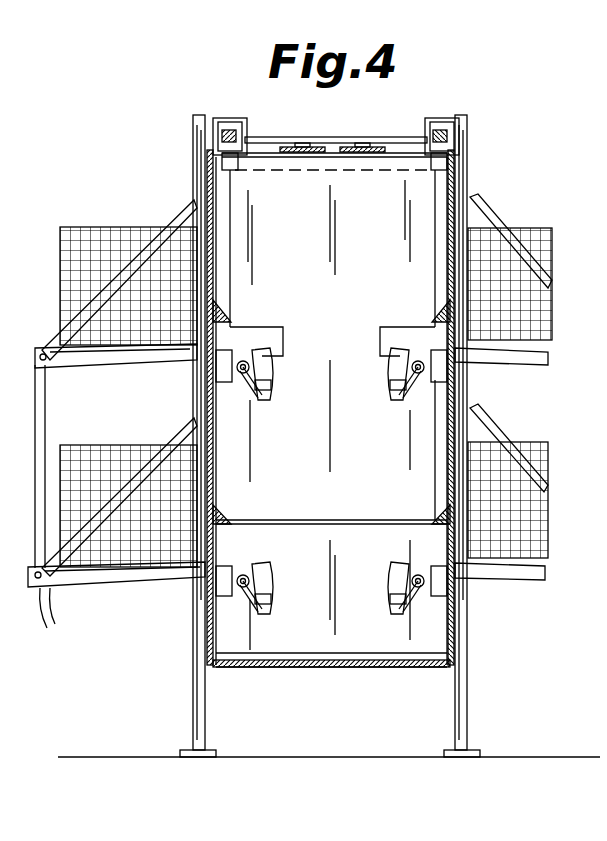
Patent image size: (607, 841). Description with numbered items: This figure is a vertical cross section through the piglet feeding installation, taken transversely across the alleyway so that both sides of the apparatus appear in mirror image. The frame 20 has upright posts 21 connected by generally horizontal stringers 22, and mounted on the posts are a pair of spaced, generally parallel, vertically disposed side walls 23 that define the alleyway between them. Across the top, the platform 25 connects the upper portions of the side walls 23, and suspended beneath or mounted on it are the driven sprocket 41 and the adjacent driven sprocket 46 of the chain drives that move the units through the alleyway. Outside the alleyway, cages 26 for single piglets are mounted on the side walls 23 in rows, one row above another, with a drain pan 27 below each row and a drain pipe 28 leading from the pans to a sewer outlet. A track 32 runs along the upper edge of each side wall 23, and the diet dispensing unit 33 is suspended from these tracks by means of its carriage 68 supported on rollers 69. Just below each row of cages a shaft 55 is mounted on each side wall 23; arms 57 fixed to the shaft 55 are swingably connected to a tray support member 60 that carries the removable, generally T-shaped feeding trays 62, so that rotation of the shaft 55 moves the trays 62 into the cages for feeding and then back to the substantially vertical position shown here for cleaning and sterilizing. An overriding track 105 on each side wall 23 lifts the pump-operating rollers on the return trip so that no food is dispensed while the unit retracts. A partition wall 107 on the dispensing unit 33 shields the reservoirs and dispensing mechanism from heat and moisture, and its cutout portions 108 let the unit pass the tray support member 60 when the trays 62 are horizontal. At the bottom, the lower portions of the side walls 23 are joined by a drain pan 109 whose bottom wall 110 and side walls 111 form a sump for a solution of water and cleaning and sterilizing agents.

The frame 20 is at (314, 436).
The upright post 21 is at (193, 632).
The stringer 22 is at (195, 348).
The side wall 23 is at (212, 178).
The platform 25 is at (330, 142).
The cage 26 is at (97, 220).
The drain pan 27 is at (85, 370).
The drain pipe 28 is at (36, 412).
The track 32 is at (236, 128).
The diet dispensing unit 33 is at (232, 195).
The driven sprocket 41 is at (295, 150).
The driven sprocket 46 is at (393, 133).
The shaft 55 is at (243, 375).
The arm 57 is at (398, 385).
The tray support member 60 is at (272, 391).
The feeding tray 62 is at (272, 368).
The carriage 68 is at (222, 162).
The roller 69 is at (238, 136).
The overriding track 105 is at (227, 318).
The partition wall 107 is at (450, 416).
The cutout portion 108 is at (295, 300).
The drain pan 109 is at (315, 670).
The bottom wall 110 is at (352, 668).
The side wall 111 is at (447, 652).